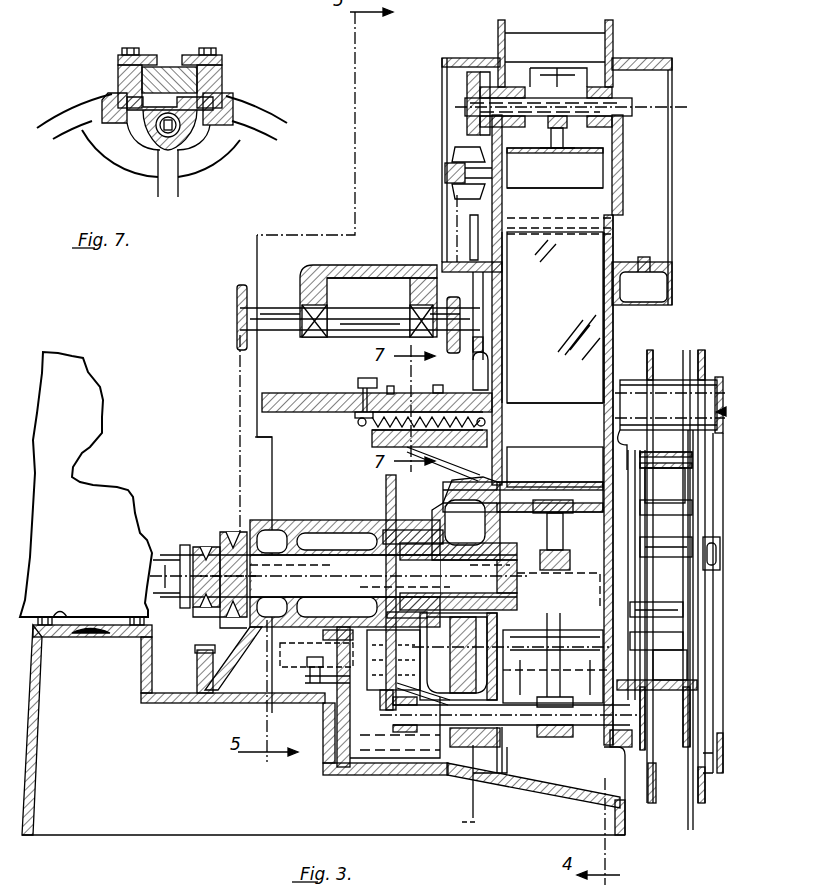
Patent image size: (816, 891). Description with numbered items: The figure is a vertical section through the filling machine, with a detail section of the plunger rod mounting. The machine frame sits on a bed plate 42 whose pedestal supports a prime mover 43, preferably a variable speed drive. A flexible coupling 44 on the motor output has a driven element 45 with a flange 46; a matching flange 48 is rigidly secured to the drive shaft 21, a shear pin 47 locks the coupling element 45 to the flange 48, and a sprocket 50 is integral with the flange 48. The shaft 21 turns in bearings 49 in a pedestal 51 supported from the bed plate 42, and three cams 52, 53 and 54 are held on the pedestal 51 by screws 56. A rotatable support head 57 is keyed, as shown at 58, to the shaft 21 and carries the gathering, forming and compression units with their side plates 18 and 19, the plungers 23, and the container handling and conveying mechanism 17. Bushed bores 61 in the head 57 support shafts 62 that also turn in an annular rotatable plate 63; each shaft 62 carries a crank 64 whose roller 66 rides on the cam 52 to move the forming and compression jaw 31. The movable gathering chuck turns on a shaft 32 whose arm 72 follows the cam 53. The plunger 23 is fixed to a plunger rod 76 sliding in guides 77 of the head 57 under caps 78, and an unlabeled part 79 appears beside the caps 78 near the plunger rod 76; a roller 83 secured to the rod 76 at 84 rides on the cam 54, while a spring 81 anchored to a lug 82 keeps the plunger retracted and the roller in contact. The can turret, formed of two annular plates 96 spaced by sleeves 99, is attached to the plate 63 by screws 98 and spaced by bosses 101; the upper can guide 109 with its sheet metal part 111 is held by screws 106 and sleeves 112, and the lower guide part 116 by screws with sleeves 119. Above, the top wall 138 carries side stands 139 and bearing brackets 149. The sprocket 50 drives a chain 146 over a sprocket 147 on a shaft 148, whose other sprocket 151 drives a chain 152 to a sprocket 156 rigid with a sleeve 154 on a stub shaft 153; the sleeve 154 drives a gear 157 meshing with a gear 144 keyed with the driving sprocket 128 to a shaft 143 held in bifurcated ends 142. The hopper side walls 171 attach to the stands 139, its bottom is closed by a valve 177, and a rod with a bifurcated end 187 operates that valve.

In FIG. 3, the container handling and conveying mechanism 17 is at (724, 411).
In FIG. 3, the side plate 18 is at (505, 380).
In FIG. 3, the side plate 19 is at (606, 372).
In FIG. 3, the drive shaft 21 is at (327, 562).
In FIG. 7, the plunger 23 is at (152, 40).
In FIG. 3, the movable forming and compression jaw or chuck element 31 is at (572, 518).
In FIG. 3, the shaft 32 is at (524, 490).
In FIG. 3, the bed plate 42 is at (298, 700).
In FIG. 3, the prime mover 43 is at (96, 475).
In FIG. 3, the flexible coupling 44 is at (186, 546).
In FIG. 3, the driven element of the coupling 45 is at (210, 616).
In FIG. 3, the flange 46 is at (210, 547).
In FIG. 3, the shear pin 47 is at (240, 547).
In FIG. 3, the matching flange 48 is at (224, 620).
In FIG. 3, the bearings 49 is at (274, 537).
In FIG. 3, the sprocket 50 is at (235, 619).
In FIG. 3, the pedestal 51 is at (282, 623).
In FIG. 3, the cam 52 is at (394, 510).
In FIG. 3, the cam 53 is at (453, 650).
In FIG. 3, the cam 54 is at (443, 750).
In FIG. 3, the screws 56 is at (397, 530).
In FIG. 7, the rotatable support head 57 is at (108, 92).
In FIG. 3, the rotatable support head 57 is at (498, 528).
In FIG. 3, the key 58 is at (518, 596).
In FIG. 3, the bushed bores 61 is at (476, 756).
In FIG. 3, the shaft 62 is at (520, 722).
In FIG. 3, the annular rotatable plate 63 is at (627, 750).
In FIG. 3, the crank 64 is at (402, 729).
In FIG. 3, the roller 66 is at (384, 713).
In FIG. 3, the arm 72 is at (388, 485).
In FIG. 7, the plunger rod 76 is at (172, 60).
In FIG. 3, the plunger rod 76 is at (312, 401).
In FIG. 7, the guides or slides 77 is at (213, 66).
In FIG. 7, the caps 78 is at (195, 54).
In FIG. 3, the caps 78 is at (425, 395).
In FIG. 3, the pivot 79 is at (395, 385).
In FIG. 7, the spring 81 is at (152, 138).
In FIG. 3, the spring 81 is at (400, 445).
In FIG. 3, the lug 82 is at (366, 433).
In FIG. 3, the roller 83 is at (358, 382).
In FIG. 3, the roller mounting 84 is at (362, 410).
In FIG. 3, the annular plates 96 is at (695, 492).
In FIG. 3, the screws 98 is at (666, 451).
In FIG. 3, the spacing sleeves 99 is at (666, 491).
In FIG. 3, the projecting bosses 101 is at (618, 432).
In FIG. 3, the screws 106 is at (720, 552).
In FIG. 3, the upper can guide 109 is at (705, 365).
In FIG. 3, the annular sheet metal part 111 is at (657, 346).
In FIG. 3, the spacing sleeves 112 is at (690, 547).
In FIG. 3, the sheet metal side shield part or guide 116 is at (658, 785).
In FIG. 3, the spacing sleeves 119 is at (683, 617).
In FIG. 3, the driving sprocket 128 is at (548, 123).
In FIG. 3, the top wall of the main frame 138 is at (675, 283).
In FIG. 3, the side stands 139 is at (446, 83).
In FIG. 3, the bifurcated ends 142 is at (630, 89).
In FIG. 3, the shaft 143 is at (636, 108).
In FIG. 3, the gear 144 is at (467, 117).
In FIG. 3, the chain 146 is at (240, 466).
In FIG. 3, the sprocket 147 is at (248, 300).
In FIG. 3, the shaft 148 is at (275, 322).
In FIG. 3, the bearing brackets 149 is at (320, 335).
In FIG. 3, the sprocket 151 is at (467, 338).
In FIG. 3, the chain 152 is at (457, 232).
In FIG. 3, the stub shaft 153 is at (445, 173).
In FIG. 3, the sleeve 154 is at (450, 157).
In FIG. 3, the sprocket 156 is at (452, 188).
In FIG. 3, the gear 157 is at (505, 164).
In FIG. 3, the side walls 171 is at (478, 262).
In FIG. 3, the closure plate or valve 177 is at (568, 405).
In FIG. 3, the bifurcated end 187 is at (508, 352).